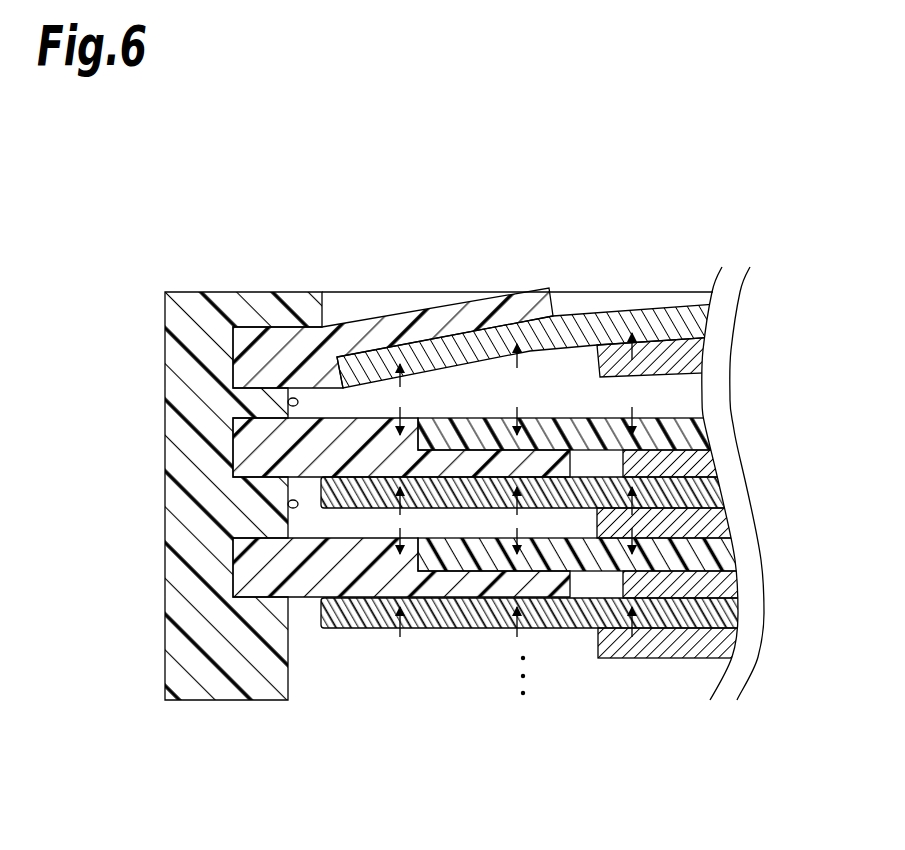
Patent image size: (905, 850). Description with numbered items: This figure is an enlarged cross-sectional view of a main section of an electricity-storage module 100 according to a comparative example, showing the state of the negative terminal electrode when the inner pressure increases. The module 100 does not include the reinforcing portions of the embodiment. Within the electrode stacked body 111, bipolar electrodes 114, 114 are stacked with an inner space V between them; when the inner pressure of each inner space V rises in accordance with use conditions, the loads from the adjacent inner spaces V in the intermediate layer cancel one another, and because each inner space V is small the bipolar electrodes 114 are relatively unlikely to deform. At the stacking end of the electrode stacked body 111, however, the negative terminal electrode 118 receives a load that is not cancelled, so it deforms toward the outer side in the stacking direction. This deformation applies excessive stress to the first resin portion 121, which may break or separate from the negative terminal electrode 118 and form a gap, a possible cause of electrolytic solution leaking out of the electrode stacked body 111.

The electricity-storage module 100 is at (203, 202).
The electrode stacked body 111 is at (405, 250).
The bipolar electrode 114 is at (703, 493).
The negative terminal electrode 118 is at (703, 318).
The first resin portion 121 is at (253, 358).
The inner space V is at (288, 403).